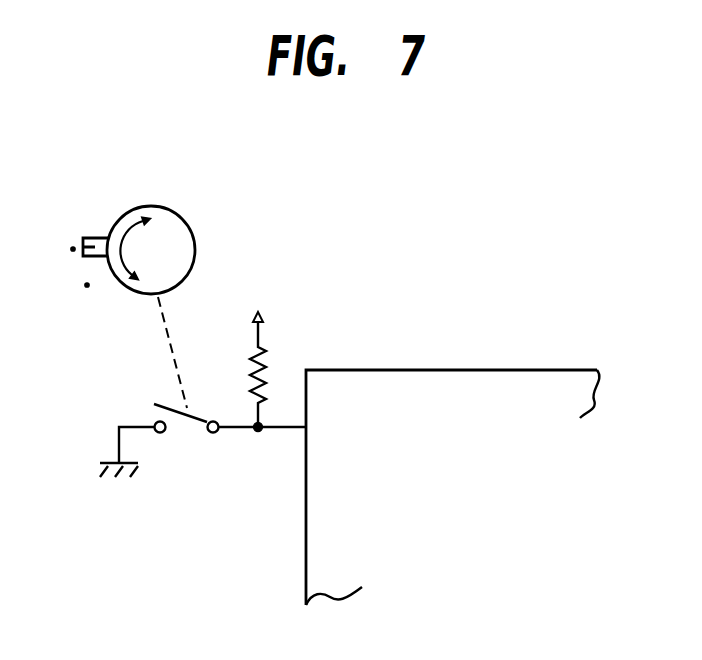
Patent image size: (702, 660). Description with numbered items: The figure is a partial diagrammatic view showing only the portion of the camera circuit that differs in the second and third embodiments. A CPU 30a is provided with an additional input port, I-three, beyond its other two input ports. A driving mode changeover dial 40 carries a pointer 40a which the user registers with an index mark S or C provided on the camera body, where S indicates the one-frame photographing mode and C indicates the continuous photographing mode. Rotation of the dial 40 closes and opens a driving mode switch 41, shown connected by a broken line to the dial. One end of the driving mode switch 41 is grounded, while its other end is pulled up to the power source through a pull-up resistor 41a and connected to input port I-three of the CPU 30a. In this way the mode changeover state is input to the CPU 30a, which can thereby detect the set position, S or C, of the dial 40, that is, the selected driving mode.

The driving mode changeover dial 40 is at (185, 218).
The pointer 40a is at (97, 239).
The driving mode switch 41 is at (185, 433).
The pull-up resistor 41a is at (275, 370).
The CPU 30a is at (470, 375).